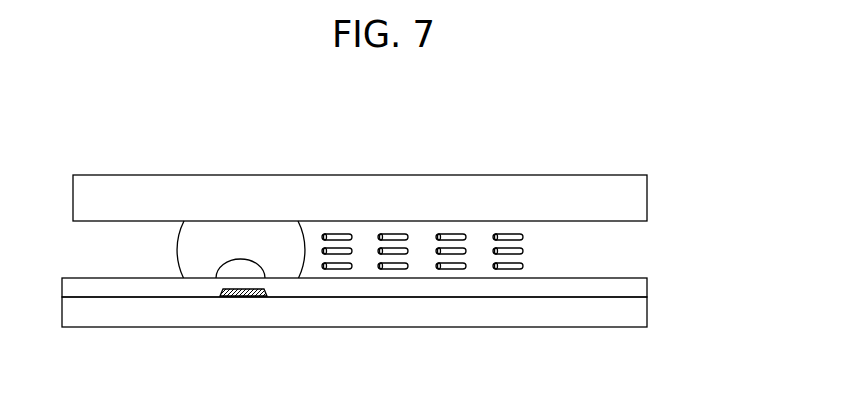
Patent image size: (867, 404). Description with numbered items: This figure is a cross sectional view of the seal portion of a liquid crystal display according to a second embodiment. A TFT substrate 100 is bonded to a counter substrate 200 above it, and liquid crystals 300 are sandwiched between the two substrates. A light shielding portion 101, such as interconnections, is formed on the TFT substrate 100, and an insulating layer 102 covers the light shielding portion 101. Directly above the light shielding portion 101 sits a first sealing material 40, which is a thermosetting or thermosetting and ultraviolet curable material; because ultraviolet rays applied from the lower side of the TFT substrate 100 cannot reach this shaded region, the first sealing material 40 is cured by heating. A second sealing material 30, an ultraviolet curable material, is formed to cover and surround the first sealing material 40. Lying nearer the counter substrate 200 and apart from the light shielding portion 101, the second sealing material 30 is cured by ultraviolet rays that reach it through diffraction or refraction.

The counter substrate 200 is at (636, 195).
The insulating layer 102 is at (636, 286).
The TFT substrate 100 is at (636, 311).
The second sealing material 30 is at (289, 246).
The first sealing material 40 is at (232, 272).
The light shielding portion 101 is at (225, 297).
The liquid crystals 300 is at (437, 252).